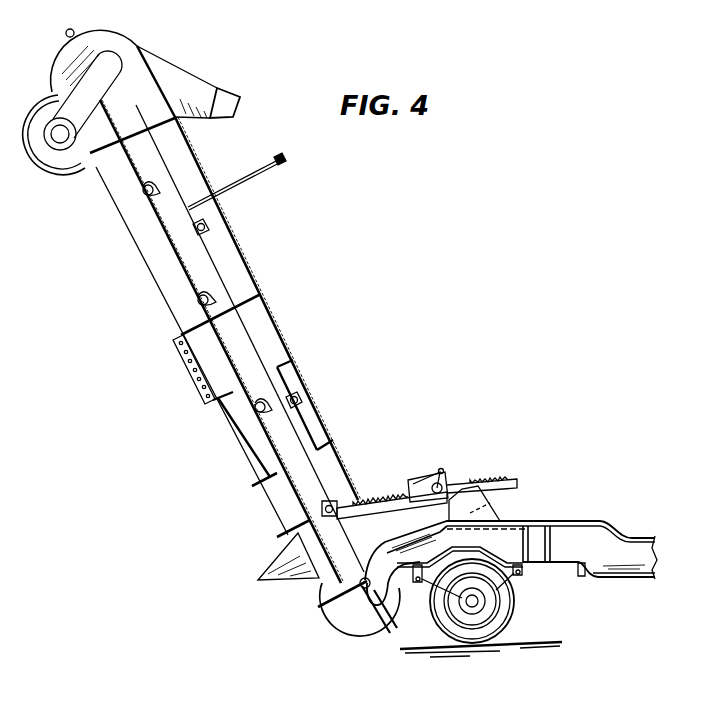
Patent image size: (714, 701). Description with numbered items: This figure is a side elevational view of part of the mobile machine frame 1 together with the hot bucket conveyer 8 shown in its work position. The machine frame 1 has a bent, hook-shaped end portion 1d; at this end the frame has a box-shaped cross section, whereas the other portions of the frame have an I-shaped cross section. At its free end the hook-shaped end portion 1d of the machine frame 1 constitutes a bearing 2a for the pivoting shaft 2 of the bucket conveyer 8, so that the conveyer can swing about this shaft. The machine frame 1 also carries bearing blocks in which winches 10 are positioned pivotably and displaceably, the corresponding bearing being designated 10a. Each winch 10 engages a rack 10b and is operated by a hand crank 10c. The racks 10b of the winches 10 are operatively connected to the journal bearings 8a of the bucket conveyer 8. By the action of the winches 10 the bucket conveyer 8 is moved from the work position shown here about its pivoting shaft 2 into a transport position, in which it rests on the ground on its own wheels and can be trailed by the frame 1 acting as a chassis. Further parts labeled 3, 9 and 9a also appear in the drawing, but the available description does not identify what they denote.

The machine frame 1 is at (624, 548).
The hook-shaped end portion 1d is at (384, 581).
The pivoting shaft 2 is at (322, 580).
The bearing 2a is at (364, 607).
The ground wheel 3 is at (502, 608).
The hot bucket conveyer 8 is at (228, 255).
The journal bearings 8a is at (343, 486).
The adjusting lever arm 9 is at (489, 512).
The lever plate 9a is at (477, 485).
The winches 10 is at (426, 505).
The bearing 10a is at (446, 480).
The racks 10b is at (502, 482).
The hand cranks 10c is at (433, 475).